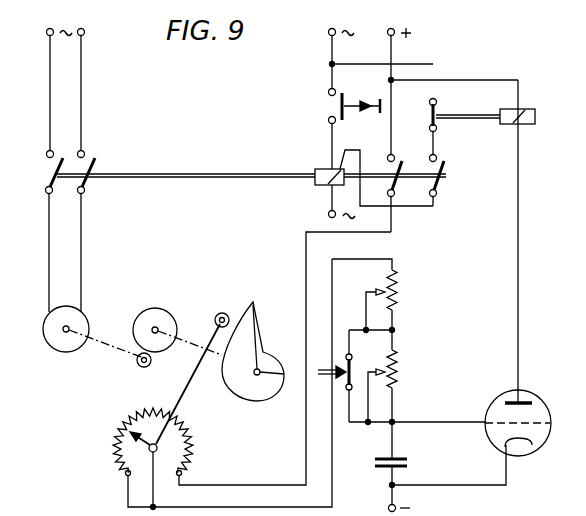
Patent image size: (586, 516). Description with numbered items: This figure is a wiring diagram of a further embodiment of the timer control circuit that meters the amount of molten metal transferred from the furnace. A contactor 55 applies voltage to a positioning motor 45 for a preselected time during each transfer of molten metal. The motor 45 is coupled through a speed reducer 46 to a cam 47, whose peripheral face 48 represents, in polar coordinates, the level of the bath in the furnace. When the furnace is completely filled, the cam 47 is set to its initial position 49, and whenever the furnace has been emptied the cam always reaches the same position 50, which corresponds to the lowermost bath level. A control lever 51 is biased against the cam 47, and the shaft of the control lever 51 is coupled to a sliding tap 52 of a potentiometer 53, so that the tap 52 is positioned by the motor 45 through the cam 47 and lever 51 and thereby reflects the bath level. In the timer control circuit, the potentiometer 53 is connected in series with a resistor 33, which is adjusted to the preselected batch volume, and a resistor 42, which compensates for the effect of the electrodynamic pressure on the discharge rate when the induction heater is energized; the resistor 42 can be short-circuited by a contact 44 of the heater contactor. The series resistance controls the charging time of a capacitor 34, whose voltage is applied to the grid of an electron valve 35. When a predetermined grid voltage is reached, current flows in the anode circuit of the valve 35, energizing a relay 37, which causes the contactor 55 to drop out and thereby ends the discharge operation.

The resistor 33 is at (400, 277).
The capacitor 34 is at (409, 463).
The valve 35 is at (540, 411).
The relay 37 is at (535, 116).
The resistor 42 is at (400, 355).
The contact 44 is at (344, 363).
The positioning motor 45 is at (50, 323).
The speed reducer 46 is at (148, 314).
The cam 47 is at (253, 316).
The peripheral face 48 is at (253, 401).
The initial position 49 is at (280, 376).
The position 50 is at (240, 310).
The control lever 51 is at (185, 396).
The sliding tap 52 is at (124, 445).
The potentiometer 53 is at (135, 419).
The contactor 55 is at (328, 168).